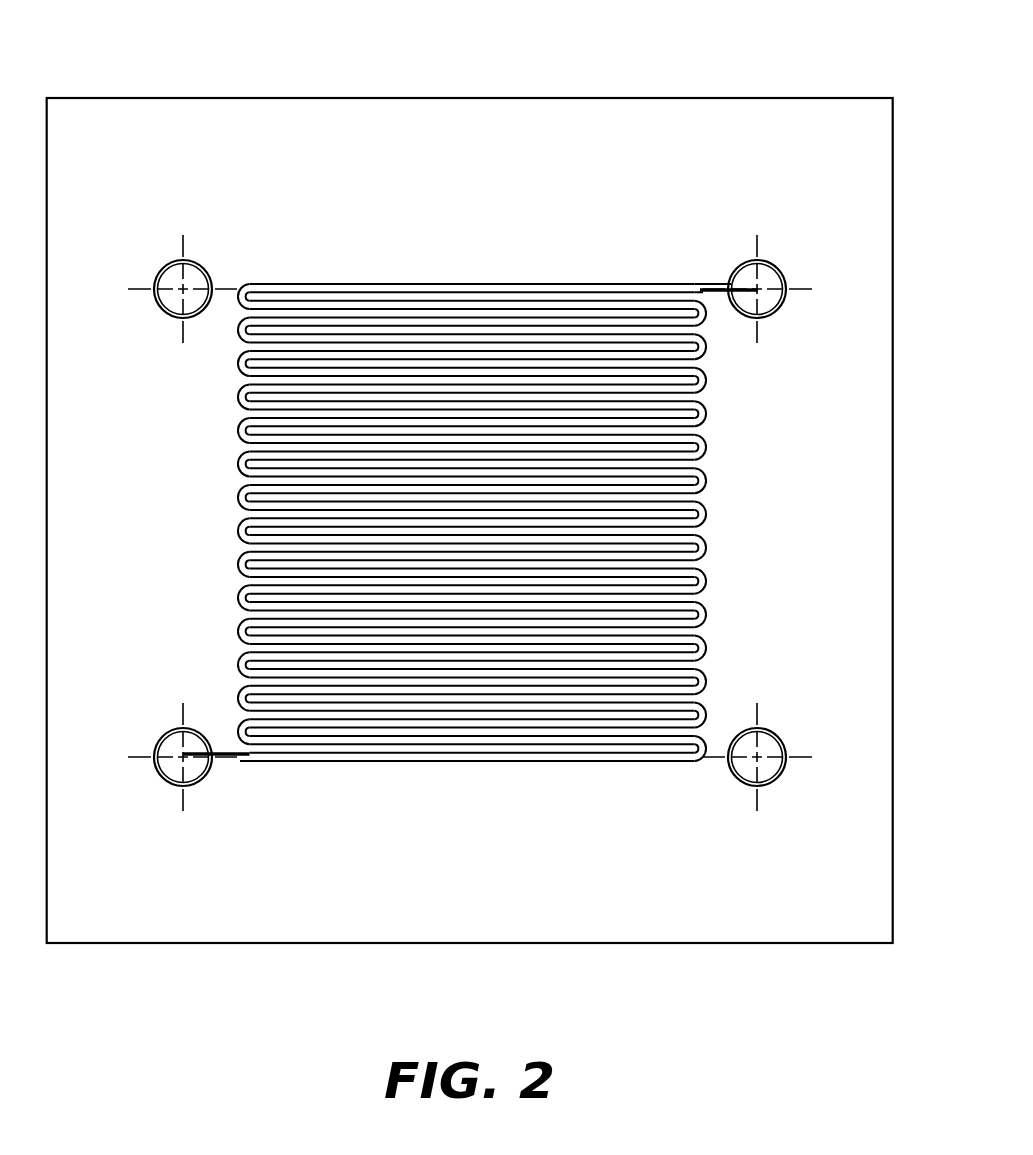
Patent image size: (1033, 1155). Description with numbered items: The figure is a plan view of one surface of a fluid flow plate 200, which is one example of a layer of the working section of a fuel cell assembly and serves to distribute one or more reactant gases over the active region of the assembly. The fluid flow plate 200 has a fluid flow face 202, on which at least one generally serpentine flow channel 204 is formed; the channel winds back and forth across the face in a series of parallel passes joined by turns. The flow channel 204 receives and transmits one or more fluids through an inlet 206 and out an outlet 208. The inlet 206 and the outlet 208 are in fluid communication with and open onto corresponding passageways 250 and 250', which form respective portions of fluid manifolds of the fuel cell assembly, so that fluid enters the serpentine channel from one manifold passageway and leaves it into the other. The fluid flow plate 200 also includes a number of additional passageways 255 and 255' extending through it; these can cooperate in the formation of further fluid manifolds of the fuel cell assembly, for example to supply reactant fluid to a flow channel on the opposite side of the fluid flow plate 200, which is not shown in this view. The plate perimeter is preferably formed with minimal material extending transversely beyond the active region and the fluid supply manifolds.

The fluid flow plate 200 is at (97, 53).
The fluid flow face 202 is at (835, 137).
The serpentine flow channel 204 is at (522, 280).
The inlet 206 is at (732, 290).
The outlet 208 is at (205, 757).
The passageway 250 is at (759, 262).
The passageway 250' is at (182, 731).
The passageway 255 is at (182, 262).
The passageway 255' is at (757, 731).